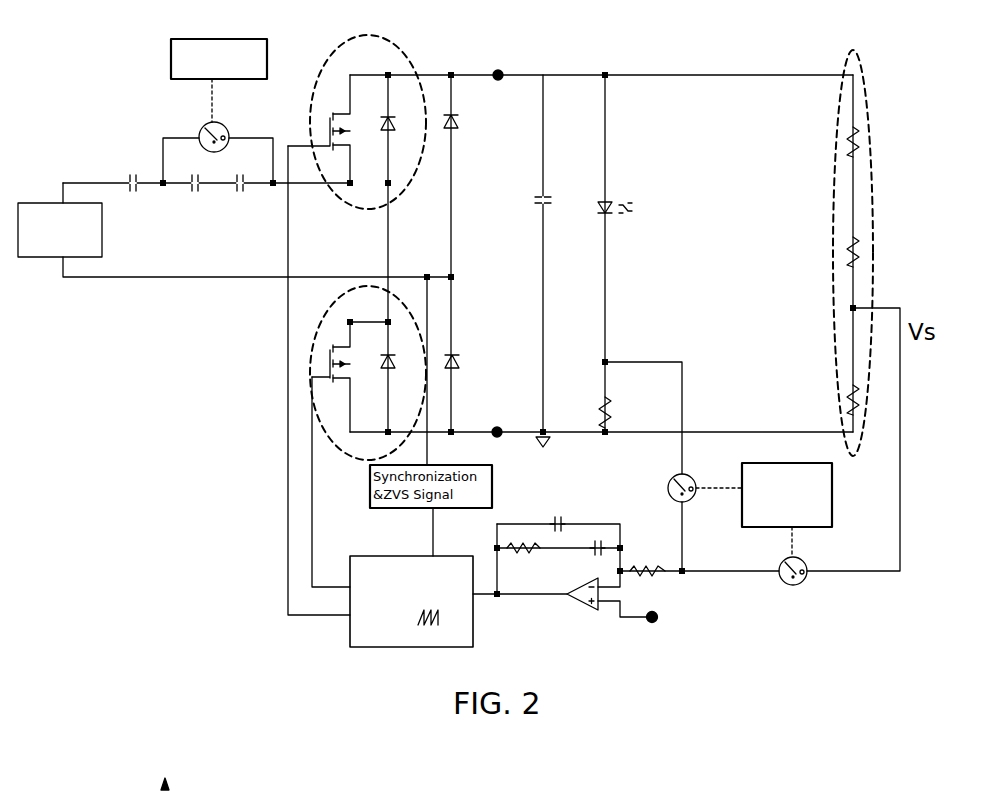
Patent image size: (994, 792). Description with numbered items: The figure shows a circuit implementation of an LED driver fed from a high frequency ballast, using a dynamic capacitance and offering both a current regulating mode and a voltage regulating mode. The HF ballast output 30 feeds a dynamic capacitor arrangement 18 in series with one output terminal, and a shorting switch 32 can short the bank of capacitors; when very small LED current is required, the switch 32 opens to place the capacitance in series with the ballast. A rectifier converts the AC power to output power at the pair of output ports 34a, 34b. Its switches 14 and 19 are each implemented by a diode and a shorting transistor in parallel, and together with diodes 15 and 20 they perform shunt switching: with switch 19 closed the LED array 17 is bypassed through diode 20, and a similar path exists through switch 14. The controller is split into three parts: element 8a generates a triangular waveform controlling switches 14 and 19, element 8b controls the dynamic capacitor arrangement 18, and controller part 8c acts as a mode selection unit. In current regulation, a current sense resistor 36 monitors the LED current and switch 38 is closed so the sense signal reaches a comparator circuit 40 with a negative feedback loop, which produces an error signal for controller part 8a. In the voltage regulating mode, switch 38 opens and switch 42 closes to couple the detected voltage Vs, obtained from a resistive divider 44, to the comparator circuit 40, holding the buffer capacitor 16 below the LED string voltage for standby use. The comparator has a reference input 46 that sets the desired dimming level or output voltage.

The controller part 8a is at (362, 652).
The controller element 8b is at (171, 71).
The mode selection unit 8c is at (832, 494).
The switch 14 is at (415, 67).
The diode 15 is at (453, 130).
The buffer capacitor 16 is at (553, 196).
The LED array 17 is at (608, 205).
The dynamic capacitor arrangement 18 is at (214, 212).
The switch 19 is at (316, 345).
The diode 20 is at (459, 364).
The HF ballast output 30 is at (42, 203).
The shorting switch 32 is at (200, 130).
The output port 34a is at (500, 72).
The output port 34b is at (498, 428).
The current sense resistor 36 is at (604, 403).
The switch 38 is at (668, 490).
The comparator circuit 40 is at (566, 612).
The switch 42 is at (790, 585).
The resistive divider 44 is at (833, 165).
The reference input 46 is at (657, 619).